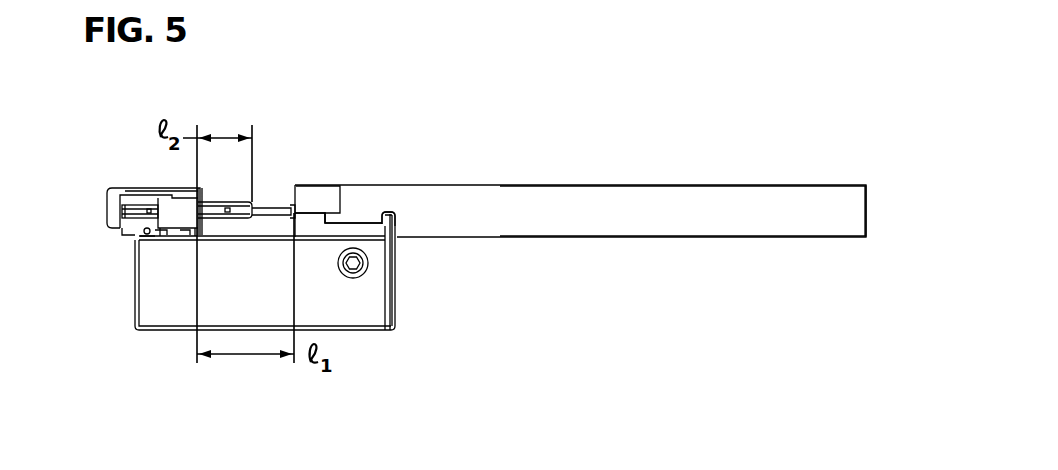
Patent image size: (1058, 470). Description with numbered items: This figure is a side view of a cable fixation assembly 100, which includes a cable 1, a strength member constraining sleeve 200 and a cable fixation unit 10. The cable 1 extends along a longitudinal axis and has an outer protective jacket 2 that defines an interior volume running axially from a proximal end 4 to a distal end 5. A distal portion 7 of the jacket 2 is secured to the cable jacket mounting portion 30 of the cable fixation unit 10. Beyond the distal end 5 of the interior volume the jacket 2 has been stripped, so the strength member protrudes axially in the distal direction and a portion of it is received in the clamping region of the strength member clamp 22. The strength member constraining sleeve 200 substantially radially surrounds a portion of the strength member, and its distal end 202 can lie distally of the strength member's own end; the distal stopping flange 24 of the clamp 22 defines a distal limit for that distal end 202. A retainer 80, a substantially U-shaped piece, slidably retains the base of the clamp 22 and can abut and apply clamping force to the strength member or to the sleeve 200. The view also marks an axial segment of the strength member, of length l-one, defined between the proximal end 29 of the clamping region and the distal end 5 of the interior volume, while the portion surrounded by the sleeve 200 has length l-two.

The cable fixation assembly 100 is at (631, 111).
The cable fixation unit 10 is at (122, 353).
The cable 1 is at (730, 202).
The outer protective jacket 2 is at (812, 197).
The proximal end 4 is at (867, 200).
The distal end 5 is at (294, 192).
The distal portion 7 is at (340, 194).
The strength member clamp 22 is at (142, 188).
The distal stopping flange 24 is at (118, 228).
The proximal end 29 is at (202, 227).
The cable jacket mounting portion 30 is at (389, 222).
The retainer 80 is at (146, 234).
The strength member constraining sleeve 200 is at (229, 202).
The distal end 202 is at (127, 213).